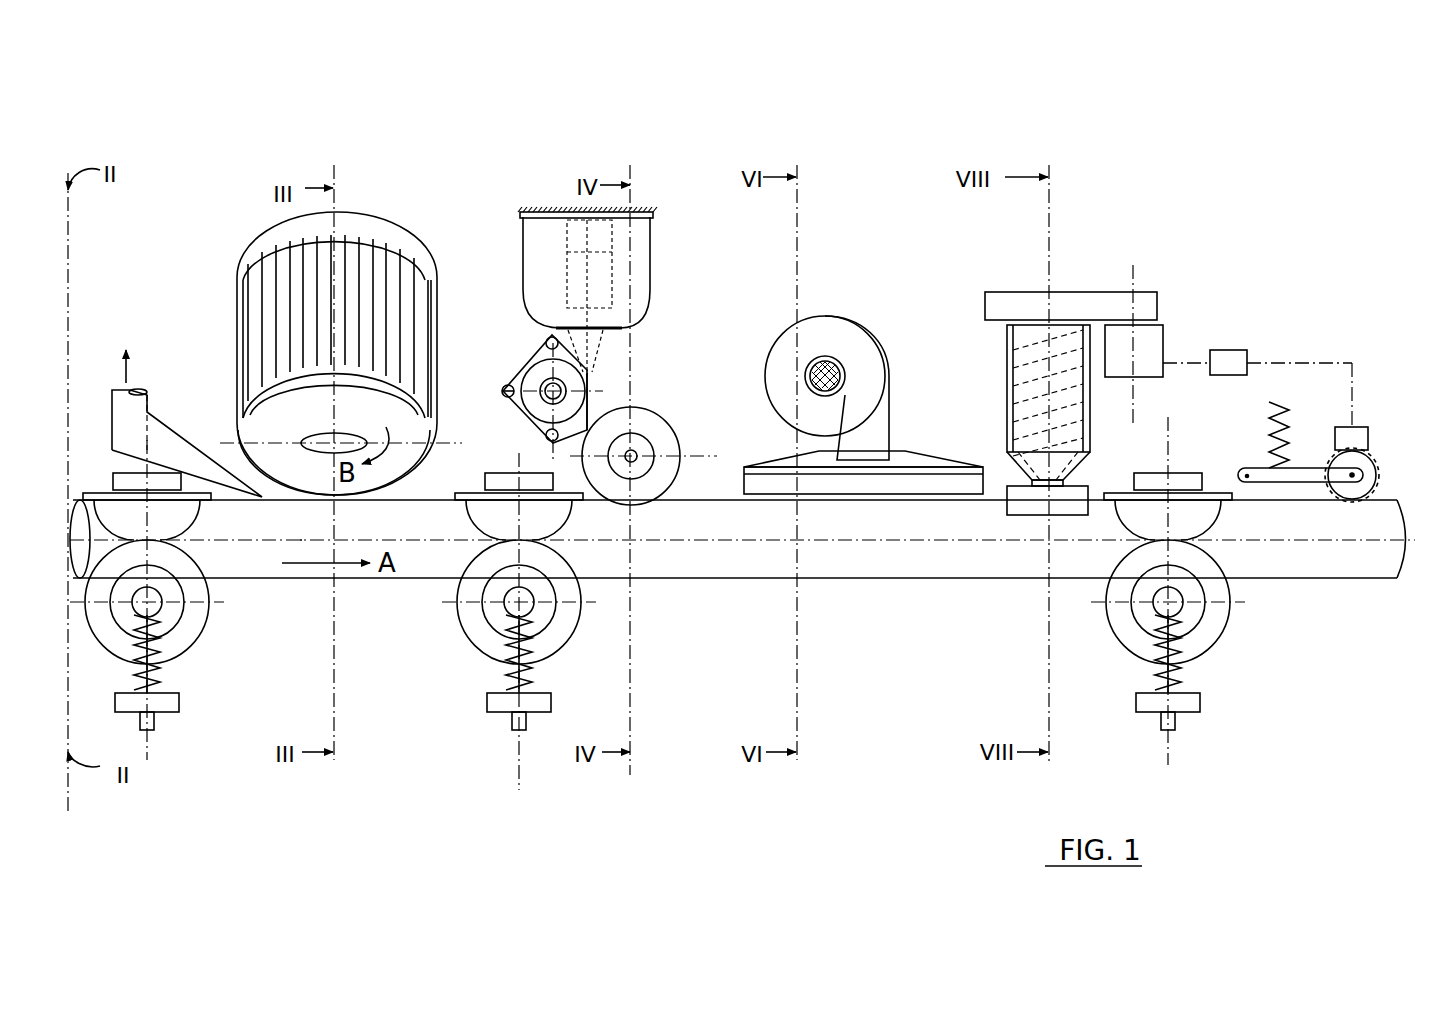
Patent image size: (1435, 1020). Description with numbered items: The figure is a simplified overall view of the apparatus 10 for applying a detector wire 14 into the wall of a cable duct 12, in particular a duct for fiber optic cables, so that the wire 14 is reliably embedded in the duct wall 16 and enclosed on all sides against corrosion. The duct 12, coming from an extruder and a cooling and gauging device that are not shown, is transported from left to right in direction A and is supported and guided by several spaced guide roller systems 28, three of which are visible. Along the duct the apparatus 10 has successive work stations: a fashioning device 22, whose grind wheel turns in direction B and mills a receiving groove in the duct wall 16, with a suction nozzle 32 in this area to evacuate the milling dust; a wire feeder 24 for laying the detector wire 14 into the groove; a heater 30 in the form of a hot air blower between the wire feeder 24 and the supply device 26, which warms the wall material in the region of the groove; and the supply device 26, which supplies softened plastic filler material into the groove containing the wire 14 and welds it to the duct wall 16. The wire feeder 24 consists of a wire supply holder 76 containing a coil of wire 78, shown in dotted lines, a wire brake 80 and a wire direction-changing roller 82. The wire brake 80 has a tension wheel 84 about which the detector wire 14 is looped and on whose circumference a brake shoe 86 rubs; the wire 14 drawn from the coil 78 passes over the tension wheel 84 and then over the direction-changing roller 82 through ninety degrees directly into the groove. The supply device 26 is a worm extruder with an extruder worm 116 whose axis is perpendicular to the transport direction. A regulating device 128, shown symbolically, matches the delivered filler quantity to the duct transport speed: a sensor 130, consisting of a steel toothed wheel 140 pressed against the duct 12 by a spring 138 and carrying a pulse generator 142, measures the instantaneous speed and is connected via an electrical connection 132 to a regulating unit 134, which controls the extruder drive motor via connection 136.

The apparatus 10 is at (1240, 170).
The cable duct 12 is at (735, 584).
The detector wire 14 is at (590, 412).
The duct wall 16 is at (927, 563).
The fashioning device 22 is at (333, 145).
The wire feeder 24 is at (592, 291).
The supply device 26 is at (1050, 145).
The guide roller systems 28 is at (203, 672).
The heater 30 is at (850, 290).
The suction nozzle 32 is at (137, 412).
The wire supply holder 76 is at (633, 268).
The coil of wire 78 is at (598, 237).
The wire brake 80 is at (528, 377).
The wire direction-changing roller 82 is at (658, 437).
The tension wheel 84 is at (540, 370).
The brake shoe 86 is at (518, 375).
The extruder worm 116 is at (1147, 338).
The regulating device 128 is at (1300, 389).
The sensor 130 is at (1381, 448).
The electrical connection 132 is at (1338, 363).
The regulating unit 134 is at (1232, 360).
The connection 136 is at (1167, 367).
The spring 138 is at (1272, 433).
The toothed wheel 140 is at (1348, 497).
The pulse generator 142 is at (1345, 432).